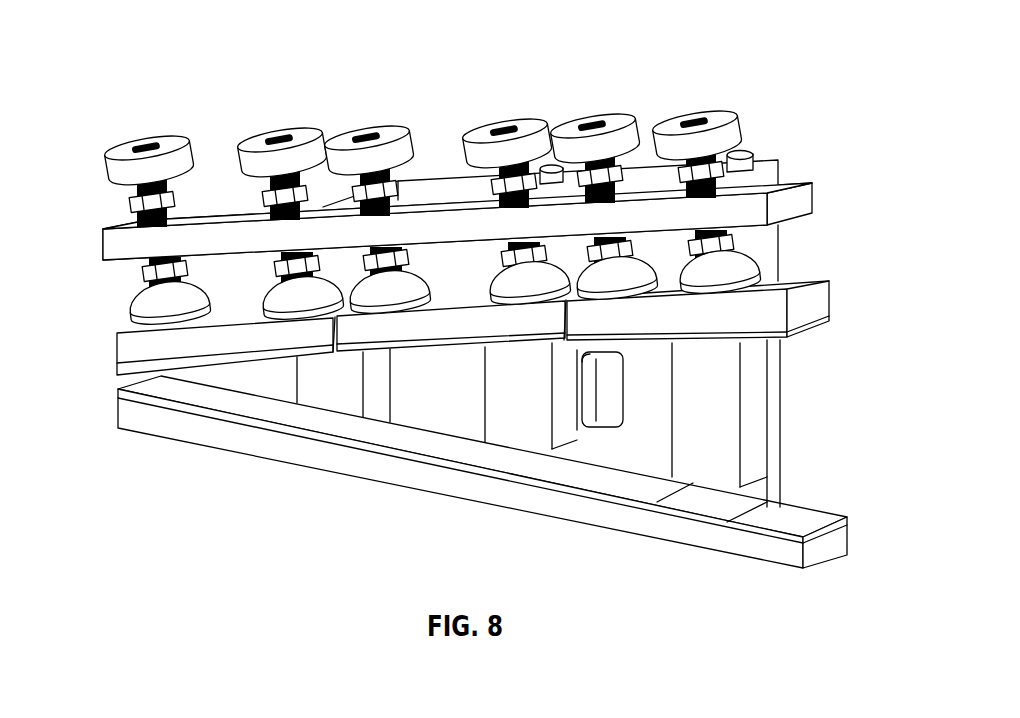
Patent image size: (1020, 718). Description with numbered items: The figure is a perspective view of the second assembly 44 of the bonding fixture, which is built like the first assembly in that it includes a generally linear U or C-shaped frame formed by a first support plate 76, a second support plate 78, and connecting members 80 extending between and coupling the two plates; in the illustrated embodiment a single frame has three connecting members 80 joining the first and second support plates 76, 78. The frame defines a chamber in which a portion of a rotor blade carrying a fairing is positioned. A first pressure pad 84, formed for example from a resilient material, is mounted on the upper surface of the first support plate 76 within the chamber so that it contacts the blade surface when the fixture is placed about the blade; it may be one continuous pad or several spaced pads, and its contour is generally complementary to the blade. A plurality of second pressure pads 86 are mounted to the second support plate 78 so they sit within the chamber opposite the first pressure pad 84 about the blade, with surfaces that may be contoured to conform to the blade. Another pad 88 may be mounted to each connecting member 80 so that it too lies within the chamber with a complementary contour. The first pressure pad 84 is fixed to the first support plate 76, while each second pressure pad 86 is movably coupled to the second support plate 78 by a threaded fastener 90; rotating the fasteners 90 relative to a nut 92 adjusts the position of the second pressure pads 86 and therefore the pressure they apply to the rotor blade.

The second assembly 44 is at (779, 42).
The first support plate 76 is at (460, 488).
The second support plate 78 is at (758, 213).
The connecting member 80 is at (395, 388).
The first pressure pad 84 is at (335, 427).
The second pressure pad 86 is at (116, 243).
The pad 88 is at (303, 384).
The threaded fastener 90 is at (613, 110).
The nut 92 is at (753, 157).